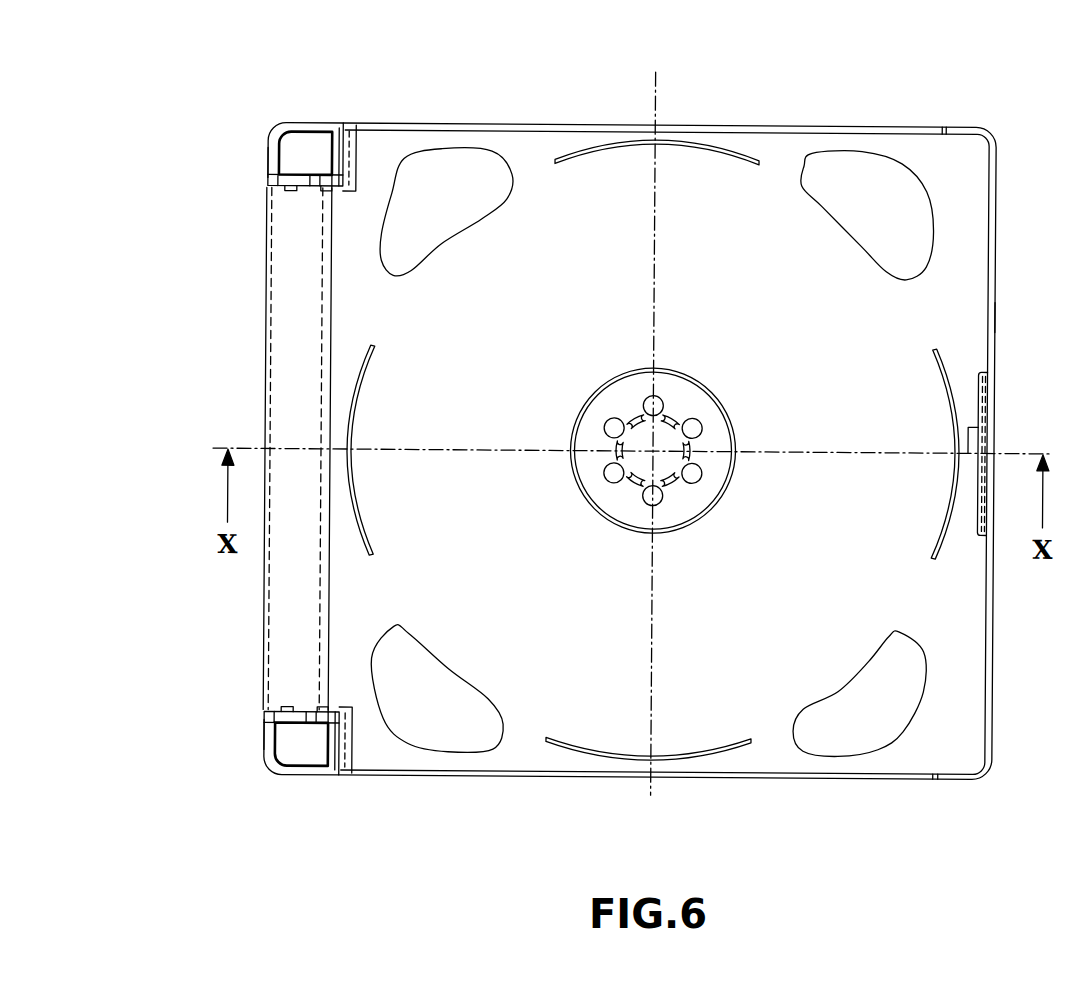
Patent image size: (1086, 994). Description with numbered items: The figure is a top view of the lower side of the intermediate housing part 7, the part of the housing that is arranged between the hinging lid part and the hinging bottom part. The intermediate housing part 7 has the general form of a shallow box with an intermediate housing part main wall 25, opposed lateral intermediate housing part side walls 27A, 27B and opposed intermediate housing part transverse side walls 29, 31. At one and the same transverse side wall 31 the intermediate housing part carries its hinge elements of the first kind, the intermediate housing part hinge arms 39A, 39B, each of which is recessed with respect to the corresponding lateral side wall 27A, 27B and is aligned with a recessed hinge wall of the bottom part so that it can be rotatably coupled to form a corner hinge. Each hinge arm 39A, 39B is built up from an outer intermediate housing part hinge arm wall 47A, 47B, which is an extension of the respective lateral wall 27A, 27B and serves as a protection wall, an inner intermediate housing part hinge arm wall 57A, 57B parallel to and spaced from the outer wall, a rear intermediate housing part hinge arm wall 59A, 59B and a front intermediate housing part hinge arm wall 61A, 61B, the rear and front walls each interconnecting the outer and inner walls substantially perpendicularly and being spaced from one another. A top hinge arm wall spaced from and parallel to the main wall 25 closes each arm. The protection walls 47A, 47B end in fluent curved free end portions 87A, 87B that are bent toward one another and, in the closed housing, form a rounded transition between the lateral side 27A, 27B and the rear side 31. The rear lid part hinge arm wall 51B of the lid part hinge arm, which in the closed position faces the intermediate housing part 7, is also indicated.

The intermediate housing part 7 is at (1000, 100).
The intermediate housing part main wall 25 is at (611, 175).
The intermediate housing part lateral side wall 27A is at (690, 124).
The intermediate housing part lateral side wall 27B is at (669, 778).
The intermediate housing part transverse side wall 29 is at (996, 317).
The intermediate housing part transverse side wall 31 is at (266, 630).
The intermediate housing part hinge arm 39A is at (338, 150).
The intermediate housing part hinge arm 39B is at (341, 779).
The outer intermediate housing part hinge arm wall 47A is at (315, 128).
The outer intermediate housing part hinge arm wall 47B is at (308, 779).
The rear lid part hinge arm wall 51B is at (318, 160).
The inner intermediate housing part hinge arm wall 57A is at (300, 195).
The inner intermediate housing part hinge arm wall 57B is at (290, 712).
The rear intermediate housing part hinge arm wall 59A is at (268, 163).
The rear intermediate housing part hinge arm wall 59B is at (266, 738).
The front intermediate housing part hinge arm wall 61A is at (337, 150).
The front intermediate housing part hinge arm wall 61B is at (333, 732).
The intermediate housing part hinge arm free end portion 87A is at (280, 123).
The intermediate housing part hinge arm free end portion 87B is at (285, 779).